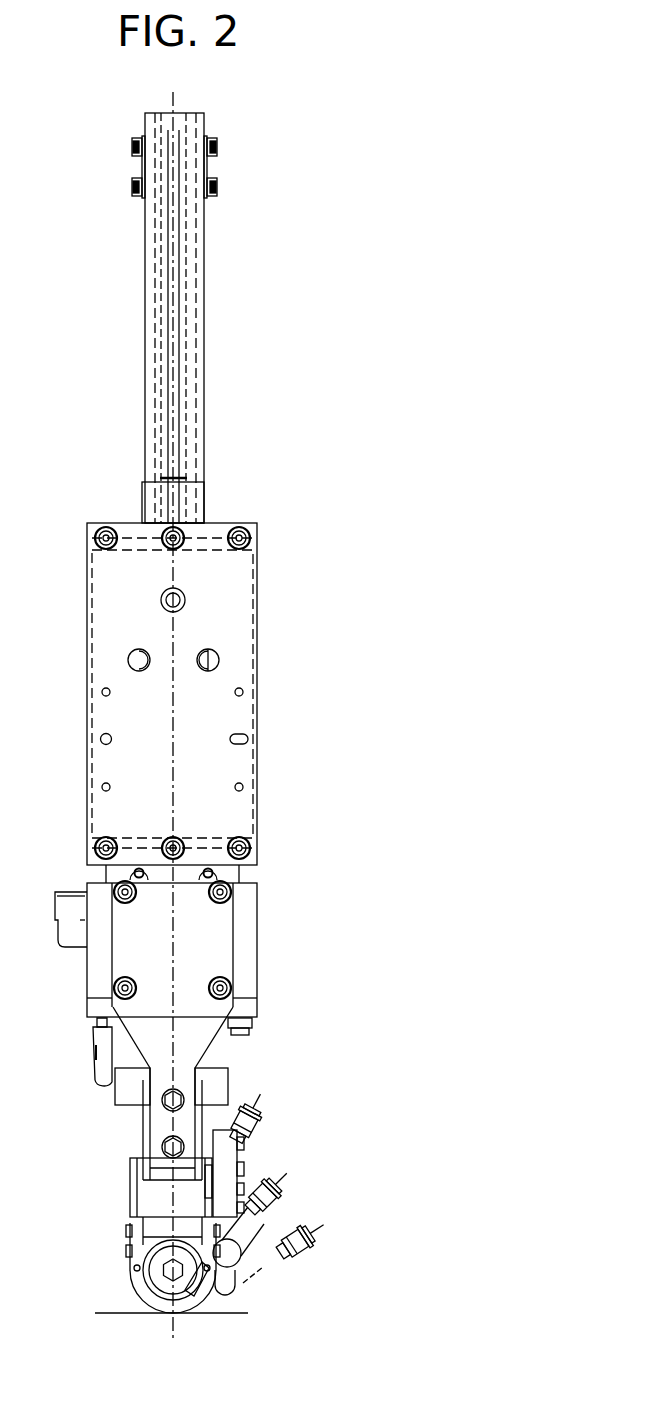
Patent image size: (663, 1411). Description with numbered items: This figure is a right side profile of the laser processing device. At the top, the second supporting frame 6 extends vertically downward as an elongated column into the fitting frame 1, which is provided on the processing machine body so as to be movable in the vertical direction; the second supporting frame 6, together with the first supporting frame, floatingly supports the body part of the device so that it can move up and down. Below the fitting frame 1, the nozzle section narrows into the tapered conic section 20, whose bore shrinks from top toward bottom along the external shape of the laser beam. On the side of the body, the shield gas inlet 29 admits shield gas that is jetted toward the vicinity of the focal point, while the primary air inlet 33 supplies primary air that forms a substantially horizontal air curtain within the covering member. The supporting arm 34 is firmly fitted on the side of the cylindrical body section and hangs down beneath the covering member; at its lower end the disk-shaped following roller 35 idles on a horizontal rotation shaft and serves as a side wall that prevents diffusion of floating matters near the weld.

The fitting frame 1 is at (240, 667).
The second supporting frame 6 is at (190, 363).
The conic section 20 is at (222, 1052).
The shield gas inlet 29 is at (245, 1257).
The primary air inlet 33 is at (263, 1100).
The supporting arm 34 is at (220, 927).
The following roller 35 is at (133, 1277).